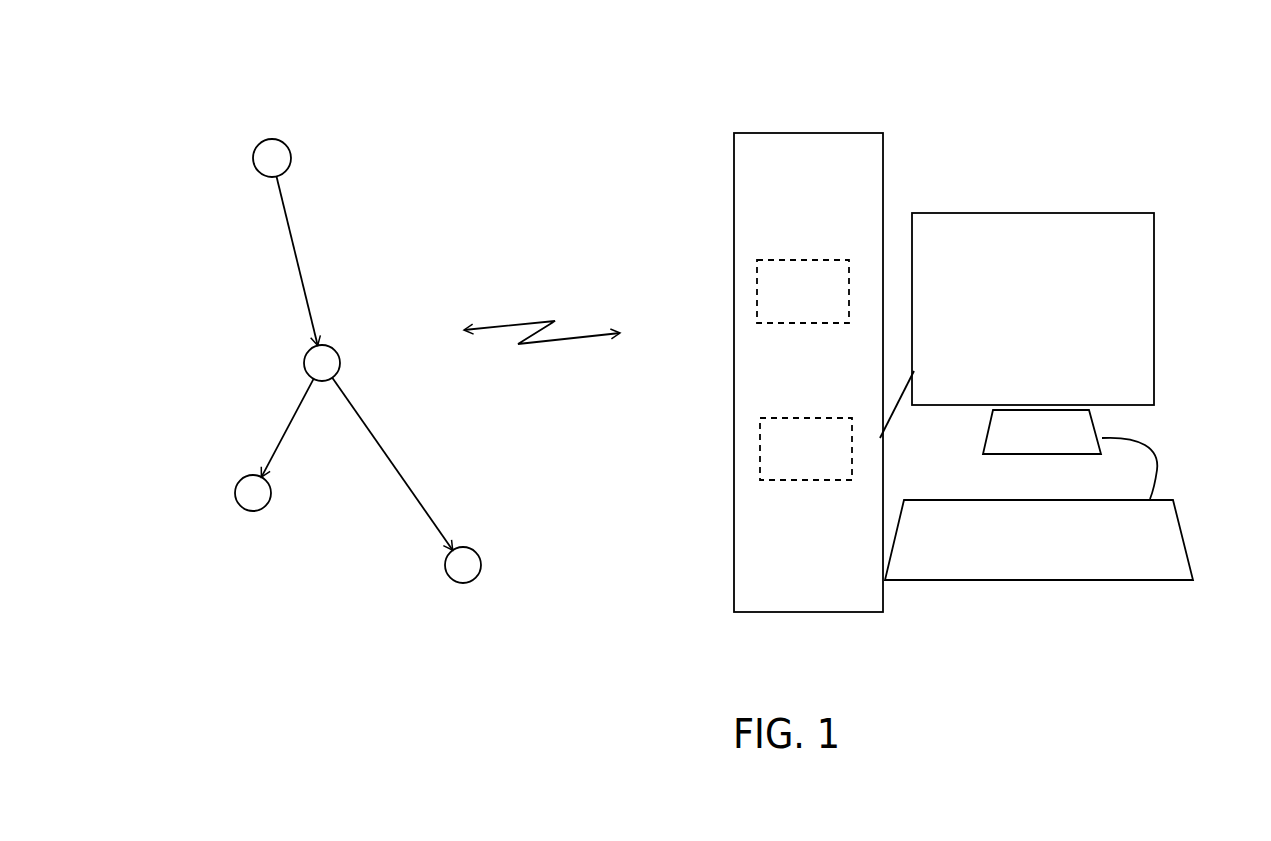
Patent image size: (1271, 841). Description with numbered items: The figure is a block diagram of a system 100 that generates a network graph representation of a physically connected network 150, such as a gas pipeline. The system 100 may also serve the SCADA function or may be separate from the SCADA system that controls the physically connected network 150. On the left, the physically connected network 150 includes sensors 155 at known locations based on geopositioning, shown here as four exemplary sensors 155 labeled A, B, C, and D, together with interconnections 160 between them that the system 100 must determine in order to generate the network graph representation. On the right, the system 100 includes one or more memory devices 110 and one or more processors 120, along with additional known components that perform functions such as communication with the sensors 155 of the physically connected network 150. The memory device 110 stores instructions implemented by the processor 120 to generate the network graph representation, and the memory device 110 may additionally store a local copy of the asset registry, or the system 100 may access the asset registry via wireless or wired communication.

The system 100 is at (1122, 121).
The memory device 110 is at (803, 291).
The processor 120 is at (806, 449).
The physically connected network 150 is at (392, 88).
The sensors 155 is at (230, 452).
The interconnections 160 is at (299, 460).